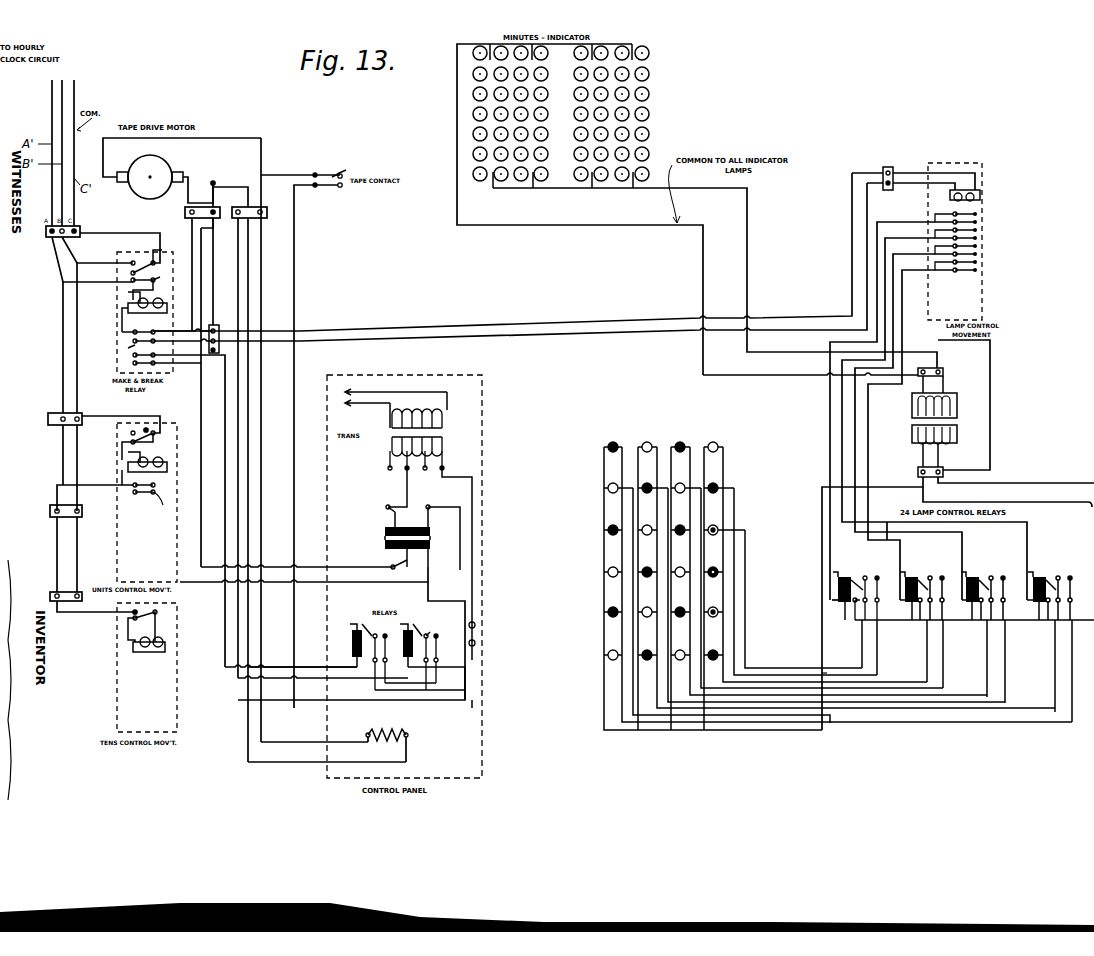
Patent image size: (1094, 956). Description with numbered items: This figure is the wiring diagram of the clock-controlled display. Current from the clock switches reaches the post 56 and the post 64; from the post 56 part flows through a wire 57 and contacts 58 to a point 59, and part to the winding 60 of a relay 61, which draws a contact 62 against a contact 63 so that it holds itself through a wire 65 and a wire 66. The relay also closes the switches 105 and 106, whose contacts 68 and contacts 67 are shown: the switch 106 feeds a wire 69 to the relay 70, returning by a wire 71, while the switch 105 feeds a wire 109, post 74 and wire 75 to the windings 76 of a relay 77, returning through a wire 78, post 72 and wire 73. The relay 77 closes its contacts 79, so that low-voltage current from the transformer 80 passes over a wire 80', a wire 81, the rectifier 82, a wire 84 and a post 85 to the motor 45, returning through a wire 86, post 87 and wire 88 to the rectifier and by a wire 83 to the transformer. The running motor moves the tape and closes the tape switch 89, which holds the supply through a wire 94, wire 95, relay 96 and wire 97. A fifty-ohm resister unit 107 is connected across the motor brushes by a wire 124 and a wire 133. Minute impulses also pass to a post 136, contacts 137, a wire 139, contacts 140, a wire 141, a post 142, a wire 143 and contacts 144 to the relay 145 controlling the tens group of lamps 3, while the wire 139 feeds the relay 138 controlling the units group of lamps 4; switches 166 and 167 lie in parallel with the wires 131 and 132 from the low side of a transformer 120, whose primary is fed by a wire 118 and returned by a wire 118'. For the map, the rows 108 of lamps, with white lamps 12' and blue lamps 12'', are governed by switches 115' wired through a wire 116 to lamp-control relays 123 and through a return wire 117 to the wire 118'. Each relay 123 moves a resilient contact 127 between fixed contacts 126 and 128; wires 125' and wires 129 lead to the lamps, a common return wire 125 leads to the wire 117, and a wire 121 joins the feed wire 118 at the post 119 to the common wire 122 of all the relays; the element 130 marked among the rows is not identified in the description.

The group of lamps 3 is at (516, 191).
The group of lamps 4 is at (612, 195).
The motor 45 is at (158, 167).
The post 56 is at (62, 236).
The wire 57 is at (97, 263).
The contacts 58 is at (143, 256).
The point 59 is at (128, 294).
The winding 60 is at (147, 297).
The relay 61 is at (122, 310).
The contact 62 is at (160, 262).
The contact 63 is at (155, 277).
The post 64 is at (52, 235).
The wire 65 is at (58, 304).
The wire 66 is at (122, 326).
The contacts 67 is at (128, 341).
The contacts 68 is at (128, 356).
The wire 69 is at (318, 336).
The relay 70 is at (982, 196).
The wire 71 is at (861, 170).
The post 72 is at (215, 331).
The wire 73 is at (185, 311).
The post 74 is at (210, 351).
The wire 75 is at (226, 364).
The windings 76 is at (352, 646).
The relay 77 is at (352, 626).
The wire 78 is at (276, 667).
The contacts 79 is at (380, 634).
The transformer 80 is at (408, 433).
The wire 80' is at (490, 637).
The wire 81 is at (351, 691).
The rectifier 82 is at (437, 535).
The wire 83 is at (395, 498).
The wire 84 is at (383, 583).
The post 85 is at (192, 216).
The wire 86 is at (211, 192).
The post 87 is at (214, 190).
The wire 88 is at (203, 233).
The switch 89 is at (343, 172).
The wire 94 is at (304, 173).
The wire 95 is at (295, 292).
The relay 96 is at (408, 630).
The wire 97 is at (452, 592).
The switch 105 is at (135, 363).
The switch 106 is at (135, 345).
The resister unit 107 is at (406, 740).
The rows of lamps 108 is at (666, 431).
The wire 109 is at (183, 373).
The switches 115' is at (979, 238).
The wire 116 is at (885, 290).
The return wire 117 is at (991, 384).
The wire 118 is at (1007, 492).
The return wire 118' is at (1016, 474).
The post 119 is at (920, 469).
The transformer 120 is at (958, 440).
The wire 121 is at (885, 497).
The common wire 122 is at (880, 625).
The lamp-control relay 123 is at (843, 605).
The wire 124 is at (248, 763).
The common return wire 125 is at (808, 600).
The wires 125' is at (798, 658).
The fixed contact 126 is at (860, 570).
The resilient contact 127 is at (867, 575).
The fixed contact 128 is at (880, 575).
The wires 129 is at (877, 657).
The contact 130 is at (720, 606).
The wire 131 is at (938, 357).
The wire 132 is at (534, 226).
The wire 133 is at (265, 732).
The post 136 is at (48, 422).
The contacts 137 is at (160, 430).
The relay 138 is at (166, 470).
The wire 139 is at (128, 470).
The contacts 140 is at (155, 487).
The wire 141 is at (60, 485).
The post 142 is at (50, 511).
The wire 143 is at (57, 590).
The contacts 144 is at (158, 611).
The relay 145 is at (166, 647).
The switch 166 is at (146, 428).
The switch 167 is at (154, 506).
The clear or white lamps 12' is at (717, 518).
The blue lamps 12'' is at (719, 560).